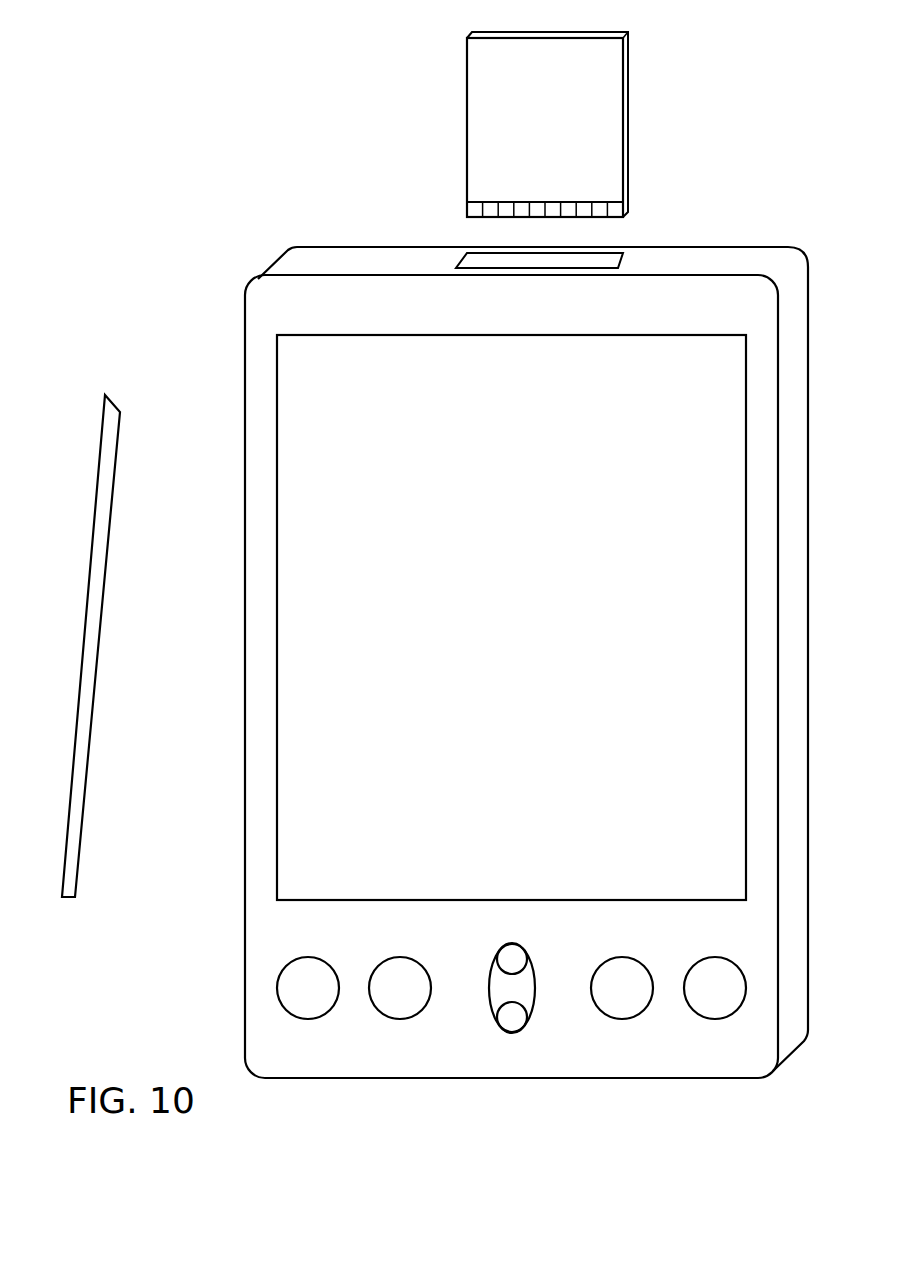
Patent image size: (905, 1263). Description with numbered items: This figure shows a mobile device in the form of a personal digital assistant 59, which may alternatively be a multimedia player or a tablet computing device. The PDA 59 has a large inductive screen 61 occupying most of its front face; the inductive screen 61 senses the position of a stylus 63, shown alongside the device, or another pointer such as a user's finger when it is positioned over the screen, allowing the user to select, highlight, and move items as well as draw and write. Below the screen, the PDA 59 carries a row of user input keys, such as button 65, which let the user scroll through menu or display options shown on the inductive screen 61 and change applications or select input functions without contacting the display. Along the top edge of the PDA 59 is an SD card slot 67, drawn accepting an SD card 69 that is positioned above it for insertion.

The personal digital assistant 59 is at (210, 446).
The inductive screen 61 is at (482, 612).
The stylus 63 is at (76, 898).
The button 65 is at (292, 980).
The SD card slot 67 is at (545, 262).
The SD card 69 is at (467, 125).